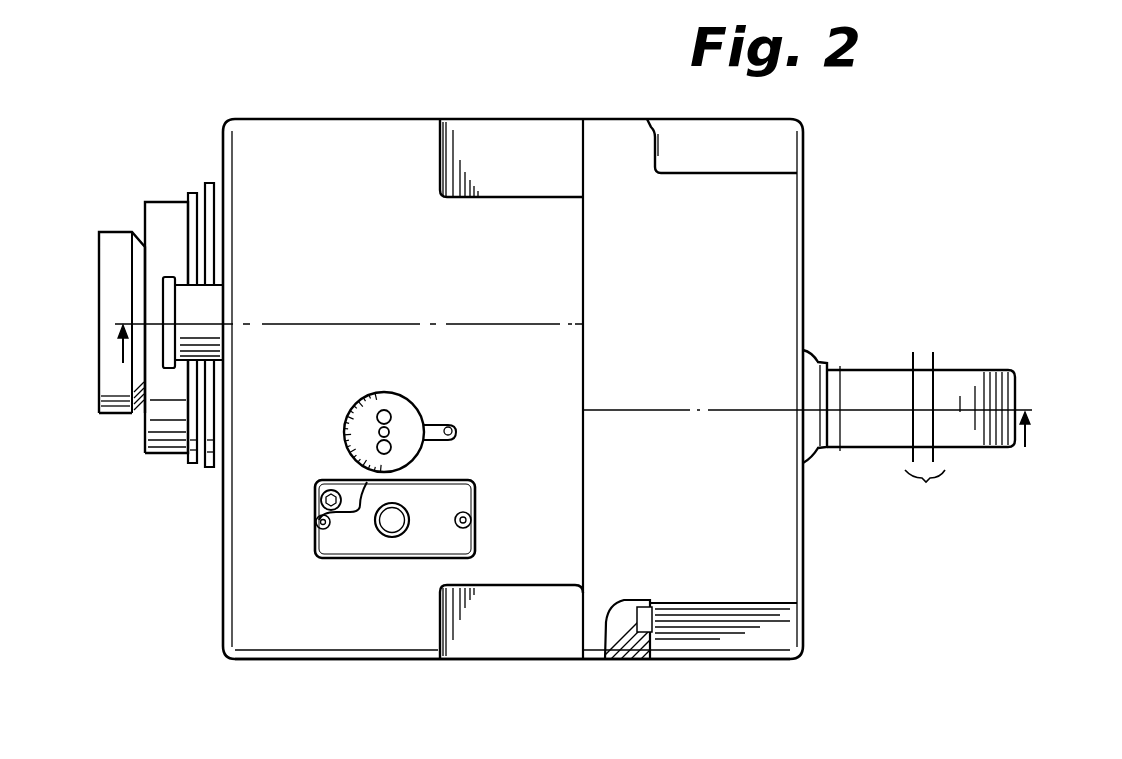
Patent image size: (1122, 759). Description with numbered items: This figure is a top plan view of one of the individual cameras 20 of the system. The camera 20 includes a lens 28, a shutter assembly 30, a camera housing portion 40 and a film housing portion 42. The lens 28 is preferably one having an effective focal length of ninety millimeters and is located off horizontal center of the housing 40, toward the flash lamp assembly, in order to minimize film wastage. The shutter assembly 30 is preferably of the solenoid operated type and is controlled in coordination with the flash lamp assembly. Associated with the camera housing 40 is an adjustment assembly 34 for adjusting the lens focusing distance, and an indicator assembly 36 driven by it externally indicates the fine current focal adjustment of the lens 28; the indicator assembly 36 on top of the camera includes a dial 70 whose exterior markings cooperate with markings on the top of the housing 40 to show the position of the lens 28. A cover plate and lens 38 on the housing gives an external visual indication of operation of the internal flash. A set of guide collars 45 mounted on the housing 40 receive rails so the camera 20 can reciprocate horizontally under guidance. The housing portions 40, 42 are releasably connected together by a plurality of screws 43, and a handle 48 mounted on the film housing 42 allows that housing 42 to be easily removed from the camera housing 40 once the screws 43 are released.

The camera 20 is at (776, 142).
The lens 28 is at (123, 417).
The shutter assembly 30 is at (170, 250).
The adjustment assembly 34 is at (197, 315).
The indicator assembly 36 is at (391, 392).
The cover plate and lens 38 is at (370, 562).
The camera housing portion 40 is at (513, 662).
The film housing portion 42 is at (766, 662).
The screws 43 is at (660, 145).
The guide collars 45 is at (535, 130).
The handle 48 is at (872, 380).
The dial 70 is at (362, 402).